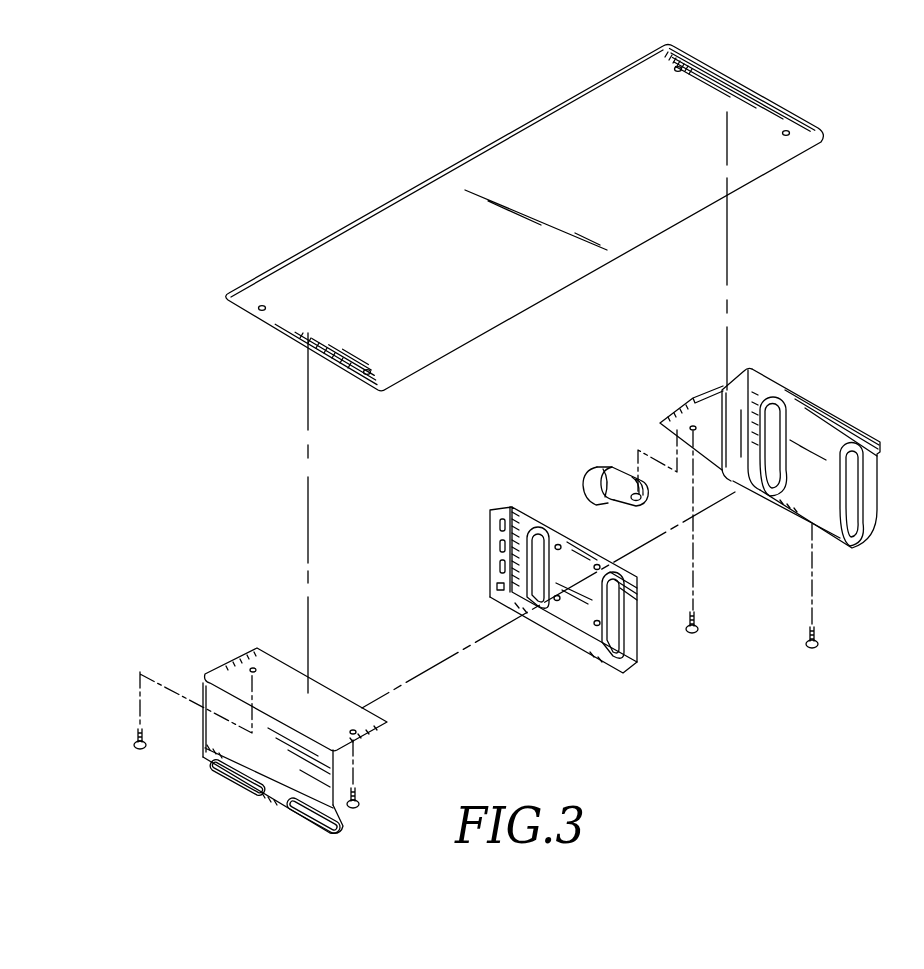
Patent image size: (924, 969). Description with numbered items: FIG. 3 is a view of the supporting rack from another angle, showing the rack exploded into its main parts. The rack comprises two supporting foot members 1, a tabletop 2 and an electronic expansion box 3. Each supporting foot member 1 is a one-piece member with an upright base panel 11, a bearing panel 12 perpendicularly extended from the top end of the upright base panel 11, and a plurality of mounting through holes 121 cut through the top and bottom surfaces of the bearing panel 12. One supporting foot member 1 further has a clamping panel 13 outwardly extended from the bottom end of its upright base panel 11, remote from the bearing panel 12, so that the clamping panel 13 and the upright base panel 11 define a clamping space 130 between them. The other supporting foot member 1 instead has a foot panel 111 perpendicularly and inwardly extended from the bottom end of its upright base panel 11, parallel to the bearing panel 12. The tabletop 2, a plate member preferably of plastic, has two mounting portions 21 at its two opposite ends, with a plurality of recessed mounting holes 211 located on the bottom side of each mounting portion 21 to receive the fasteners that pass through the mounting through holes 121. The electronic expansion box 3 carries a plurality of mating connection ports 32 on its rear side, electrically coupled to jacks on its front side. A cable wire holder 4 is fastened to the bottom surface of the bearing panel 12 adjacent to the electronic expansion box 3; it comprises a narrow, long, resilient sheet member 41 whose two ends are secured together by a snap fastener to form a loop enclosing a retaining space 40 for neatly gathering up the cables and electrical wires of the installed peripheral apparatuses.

The supporting foot member 1 is at (393, 722).
The upright base panel 11 is at (212, 738).
The foot panel 111 is at (353, 829).
The bearing panel 12 is at (273, 673).
The mounting through hole 121 is at (253, 668).
The clamping panel 13 is at (823, 413).
The clamping space 130 is at (735, 381).
The tabletop 2 is at (420, 202).
The mounting portion 21 is at (160, 268).
The recessed mounting hole 211 is at (262, 305).
The electronic expansion box 3 is at (492, 519).
The mating connection port 32 is at (498, 546).
The cable wire holder 4 is at (594, 417).
The retaining space 40 is at (604, 492).
The resilient sheet member 41 is at (610, 476).